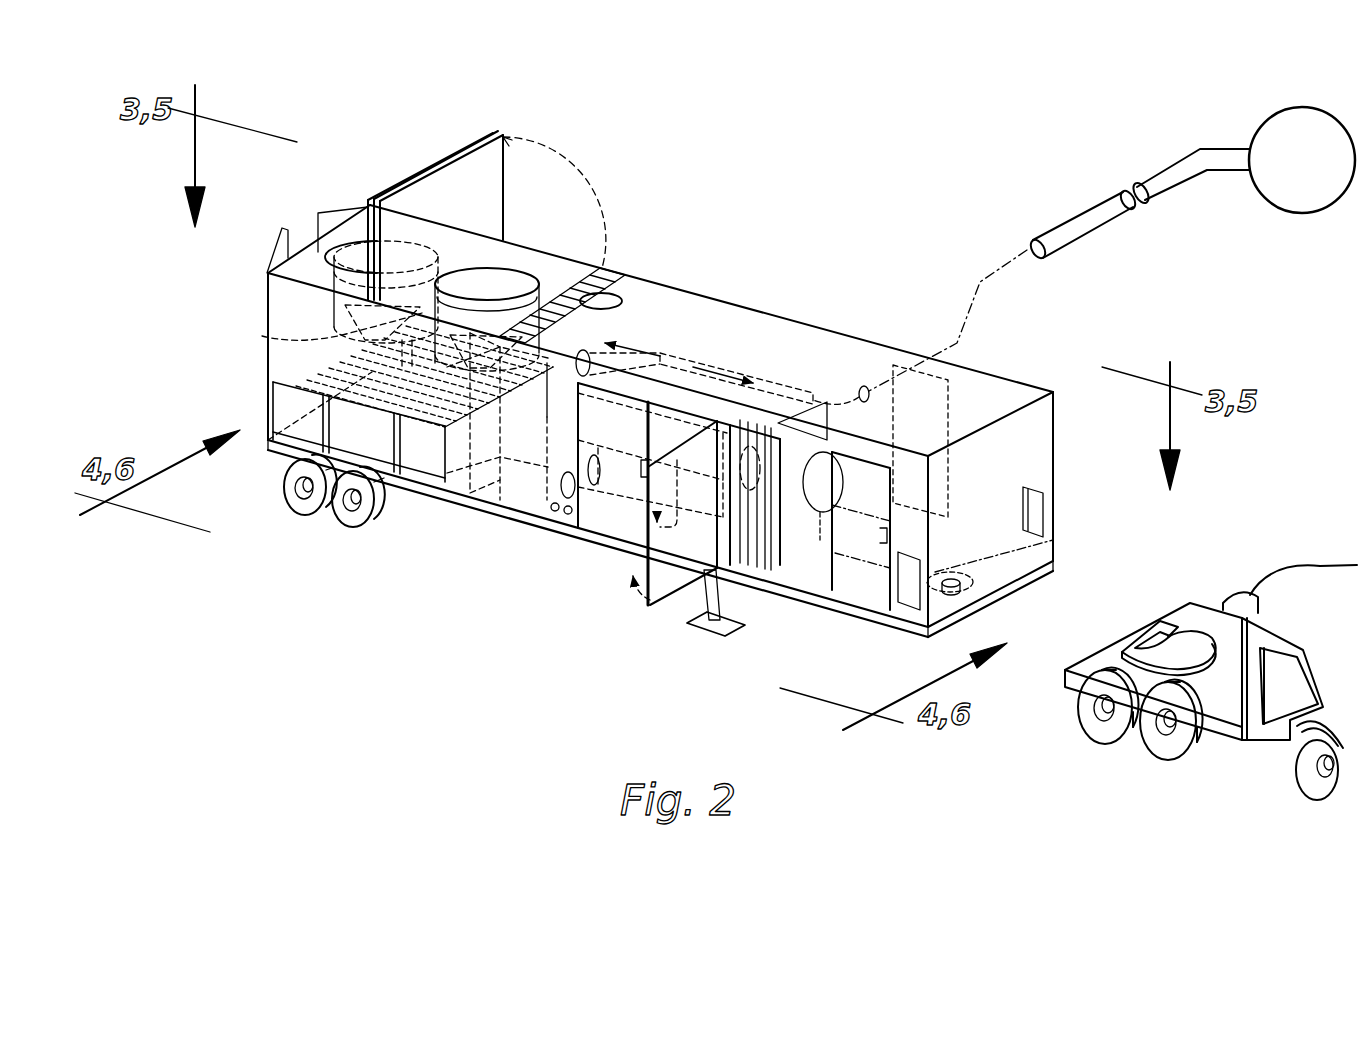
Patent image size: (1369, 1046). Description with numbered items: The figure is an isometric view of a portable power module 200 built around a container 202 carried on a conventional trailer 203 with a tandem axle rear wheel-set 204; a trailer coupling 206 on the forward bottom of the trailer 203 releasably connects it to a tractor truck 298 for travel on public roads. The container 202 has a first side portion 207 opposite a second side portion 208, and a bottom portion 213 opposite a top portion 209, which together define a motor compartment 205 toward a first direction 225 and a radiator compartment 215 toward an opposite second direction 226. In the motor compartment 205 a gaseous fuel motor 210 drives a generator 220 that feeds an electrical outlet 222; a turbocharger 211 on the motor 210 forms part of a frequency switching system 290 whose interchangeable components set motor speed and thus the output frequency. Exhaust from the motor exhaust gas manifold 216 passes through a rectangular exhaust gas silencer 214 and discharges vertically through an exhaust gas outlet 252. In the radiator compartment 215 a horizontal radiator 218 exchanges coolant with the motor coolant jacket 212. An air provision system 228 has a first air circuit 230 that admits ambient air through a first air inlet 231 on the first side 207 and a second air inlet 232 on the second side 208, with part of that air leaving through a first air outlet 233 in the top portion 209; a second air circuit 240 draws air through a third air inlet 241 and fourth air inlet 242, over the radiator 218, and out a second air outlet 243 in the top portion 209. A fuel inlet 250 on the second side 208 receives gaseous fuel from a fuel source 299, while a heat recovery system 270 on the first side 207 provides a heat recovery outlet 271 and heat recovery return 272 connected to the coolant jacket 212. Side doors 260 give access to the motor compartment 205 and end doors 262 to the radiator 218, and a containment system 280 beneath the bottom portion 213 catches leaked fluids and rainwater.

The portable power module 200 is at (334, 594).
The container 202 is at (1013, 377).
The trailer 203 is at (317, 540).
The tandem axle rear wheel-set 204 is at (294, 476).
The motor compartment 205 is at (1003, 457).
The trailer coupling 206 is at (958, 592).
The first side portion 207 is at (770, 585).
The second side portion 208 is at (1024, 481).
The top portion 209 is at (1070, 372).
The gaseous fuel motor 210 is at (712, 358).
The turbocharger 211 is at (689, 336).
The motor coolant jacket 212 is at (810, 371).
The bottom portion 213 is at (937, 638).
The exhaust gas silencer 214 is at (508, 486).
The radiator compartment 215 is at (275, 297).
The motor exhaust gas manifold 216 is at (795, 352).
The radiator 218 is at (308, 365).
The generator 220 is at (885, 456).
The electrical outlet 222 is at (1034, 513).
The first direction 225 is at (738, 368).
The second direction 226 is at (640, 350).
The air provision system 228 is at (460, 652).
The first air circuit 230 is at (682, 670).
The first air inlet 231 is at (705, 630).
The second air inlet 232 is at (933, 403).
The first air outlet 233 is at (607, 265).
The second air circuit 240 is at (265, 461).
The third air inlet 241 is at (290, 414).
The fourth air inlet 242 is at (335, 322).
The second air outlet 243 is at (331, 193).
The fuel inlet 250 is at (866, 388).
The exhaust gas outlet 252 is at (583, 298).
The side doors 260 is at (617, 523).
The end doors 262 is at (288, 247).
The heat recovery system 270 is at (518, 522).
The heat recovery outlet 271 is at (554, 512).
The heat recovery return 272 is at (568, 515).
The containment system 280 is at (892, 631).
The frequency switching system 290 is at (654, 326).
The tractor truck 298 is at (1250, 737).
The fuel source 299 is at (1299, 222).